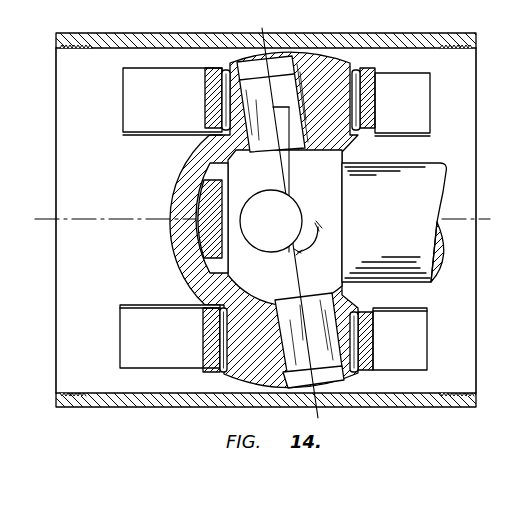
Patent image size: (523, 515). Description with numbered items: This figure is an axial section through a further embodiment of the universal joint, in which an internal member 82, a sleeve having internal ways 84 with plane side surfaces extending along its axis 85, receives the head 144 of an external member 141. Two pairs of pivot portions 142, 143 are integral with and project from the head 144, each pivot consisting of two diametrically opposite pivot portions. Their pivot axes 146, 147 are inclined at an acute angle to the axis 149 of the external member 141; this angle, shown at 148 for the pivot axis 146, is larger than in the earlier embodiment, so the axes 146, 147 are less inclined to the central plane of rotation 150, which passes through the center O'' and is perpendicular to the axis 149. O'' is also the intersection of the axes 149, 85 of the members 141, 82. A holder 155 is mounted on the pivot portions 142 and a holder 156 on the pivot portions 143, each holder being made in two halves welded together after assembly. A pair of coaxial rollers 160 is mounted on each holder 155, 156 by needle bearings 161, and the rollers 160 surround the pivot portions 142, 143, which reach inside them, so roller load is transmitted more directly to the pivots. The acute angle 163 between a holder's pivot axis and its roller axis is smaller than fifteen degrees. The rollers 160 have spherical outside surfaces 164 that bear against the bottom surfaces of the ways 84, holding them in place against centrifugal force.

The internal member 82 is at (423, 46).
The ways 84 is at (422, 118).
The axis of the internal member 85 is at (136, 217).
The external member 141 is at (394, 172).
The pivot portions 142 is at (248, 86).
The pivot portions 143 is at (268, 230).
The head 144 is at (334, 237).
The pivot axis 146 is at (290, 216).
The pivot axis 147 is at (288, 199).
The angle 148 is at (295, 248).
The axis of the external end member 149 is at (409, 219).
The central plane of rotation 150 is at (291, 163).
The holder 155 is at (186, 264).
The holder 156 is at (207, 225).
The rollers 160 is at (368, 100).
The needle bearings 161 is at (220, 95).
The acute angle 163 is at (283, 110).
The spherical outside surfaces 164 is at (362, 72).